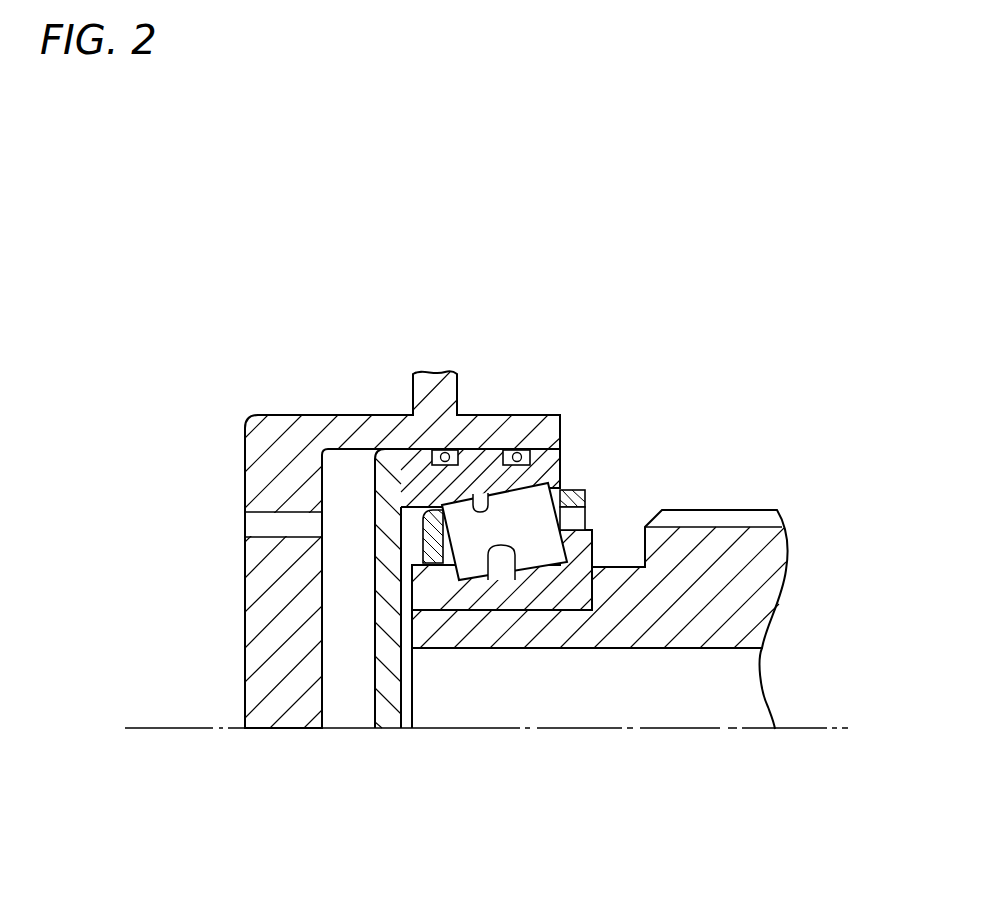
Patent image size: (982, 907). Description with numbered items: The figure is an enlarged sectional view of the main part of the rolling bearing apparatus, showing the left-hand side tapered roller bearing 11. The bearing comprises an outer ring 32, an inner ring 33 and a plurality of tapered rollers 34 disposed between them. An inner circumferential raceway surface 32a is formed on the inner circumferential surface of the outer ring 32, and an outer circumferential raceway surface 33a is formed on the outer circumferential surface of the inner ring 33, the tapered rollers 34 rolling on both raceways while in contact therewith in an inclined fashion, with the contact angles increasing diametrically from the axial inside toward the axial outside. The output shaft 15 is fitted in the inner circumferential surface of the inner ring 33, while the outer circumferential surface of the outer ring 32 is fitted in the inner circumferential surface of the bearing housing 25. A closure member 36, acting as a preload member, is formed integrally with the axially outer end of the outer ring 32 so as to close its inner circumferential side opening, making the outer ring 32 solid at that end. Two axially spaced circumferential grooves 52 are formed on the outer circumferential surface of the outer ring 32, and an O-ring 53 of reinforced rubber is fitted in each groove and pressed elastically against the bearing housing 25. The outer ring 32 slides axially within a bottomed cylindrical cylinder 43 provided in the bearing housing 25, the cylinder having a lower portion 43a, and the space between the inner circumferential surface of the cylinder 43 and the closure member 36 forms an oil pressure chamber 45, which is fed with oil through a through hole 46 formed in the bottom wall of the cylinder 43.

The tapered roller bearing 11 is at (587, 426).
The output shaft 15 is at (745, 588).
The bearing housing 25 is at (303, 415).
The outer ring 32 is at (542, 467).
The inner circumferential raceway surface 32a is at (484, 498).
The inner ring 33 is at (575, 597).
The outer circumferential raceway surface 33a is at (510, 590).
The tapered roller 34 is at (537, 510).
The closure member 36 is at (373, 663).
The cylinder 43 is at (255, 415).
The housing lower portion 43a is at (257, 640).
The oil pressure chamber 45 is at (365, 712).
The through hole 46 is at (247, 520).
The circumferential groove 52 is at (440, 451).
The O-ring 53 is at (445, 451).